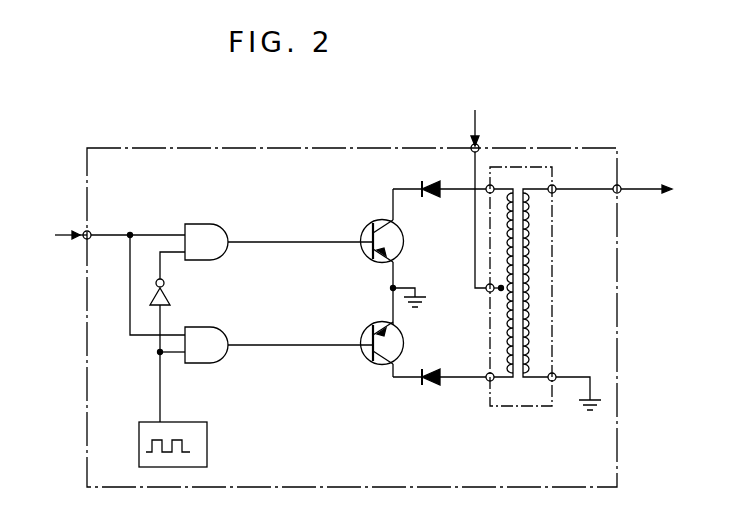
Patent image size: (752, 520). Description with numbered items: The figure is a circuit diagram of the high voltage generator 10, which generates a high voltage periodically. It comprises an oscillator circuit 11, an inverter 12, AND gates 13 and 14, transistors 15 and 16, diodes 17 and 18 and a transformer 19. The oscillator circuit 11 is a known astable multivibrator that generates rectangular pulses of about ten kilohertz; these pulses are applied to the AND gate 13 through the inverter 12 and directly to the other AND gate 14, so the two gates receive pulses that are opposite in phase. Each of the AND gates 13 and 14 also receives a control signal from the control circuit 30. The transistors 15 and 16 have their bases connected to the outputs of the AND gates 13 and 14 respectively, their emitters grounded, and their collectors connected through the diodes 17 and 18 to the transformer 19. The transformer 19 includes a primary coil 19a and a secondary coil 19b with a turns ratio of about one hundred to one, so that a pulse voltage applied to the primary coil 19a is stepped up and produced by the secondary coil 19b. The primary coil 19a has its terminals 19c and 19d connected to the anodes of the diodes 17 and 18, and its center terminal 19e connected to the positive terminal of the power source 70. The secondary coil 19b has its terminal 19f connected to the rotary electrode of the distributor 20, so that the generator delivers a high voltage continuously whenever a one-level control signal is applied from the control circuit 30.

The high voltage generator 10 is at (318, 148).
The oscillator circuit 11 is at (188, 422).
The inverter 12 is at (166, 293).
The AND gate 13 is at (200, 225).
The AND gate 14 is at (208, 327).
The transistor 15 is at (378, 219).
The transistor 16 is at (378, 321).
The diode 17 is at (428, 183).
The diode 18 is at (430, 390).
The transformer 19 is at (532, 148).
The primary coil 19a is at (503, 244).
The secondary coil 19b is at (536, 255).
The terminal 19c is at (491, 185).
The terminal 19d is at (488, 374).
The center terminal 19e is at (487, 292).
The terminal 19f is at (555, 186).
The distributor 20 is at (628, 190).
The control circuit 30 is at (57, 236).
The power source 70 is at (476, 187).